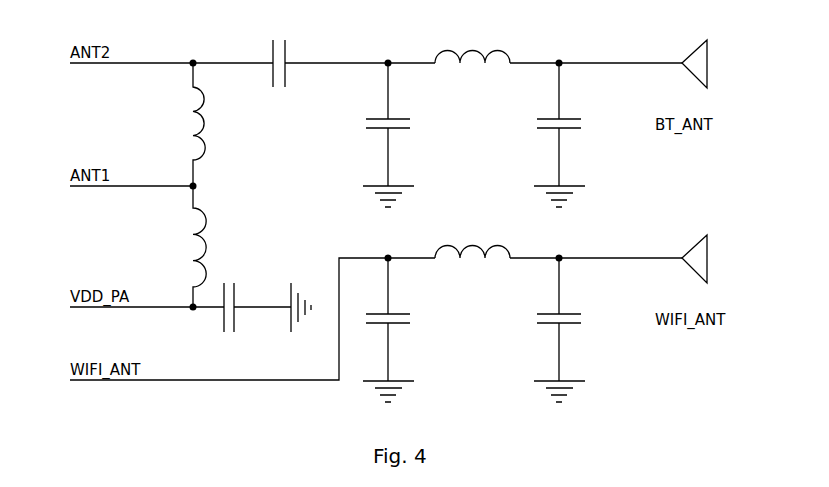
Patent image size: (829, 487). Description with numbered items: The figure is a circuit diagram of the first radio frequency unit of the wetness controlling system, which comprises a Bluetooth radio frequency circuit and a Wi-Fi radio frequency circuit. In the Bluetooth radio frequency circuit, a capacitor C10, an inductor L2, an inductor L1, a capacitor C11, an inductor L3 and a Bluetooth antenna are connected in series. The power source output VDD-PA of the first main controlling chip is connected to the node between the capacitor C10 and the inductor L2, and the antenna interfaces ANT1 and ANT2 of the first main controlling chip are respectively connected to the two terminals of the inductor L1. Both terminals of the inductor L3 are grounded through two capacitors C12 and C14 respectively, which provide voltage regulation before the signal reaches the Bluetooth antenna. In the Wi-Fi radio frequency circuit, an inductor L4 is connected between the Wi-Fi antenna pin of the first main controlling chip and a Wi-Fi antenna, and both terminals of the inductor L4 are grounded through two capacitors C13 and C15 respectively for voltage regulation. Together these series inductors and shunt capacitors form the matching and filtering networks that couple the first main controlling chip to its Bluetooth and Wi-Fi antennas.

The capacitor C10 is at (233, 298).
The capacitor C11 is at (278, 54).
The capacitor C12 is at (405, 98).
The capacitor C13 is at (405, 293).
The capacitor C14 is at (576, 98).
The capacitor C15 is at (576, 293).
The inductor L1 is at (208, 124).
The inductor L2 is at (208, 246).
The inductor L3 is at (472, 49).
The inductor L4 is at (472, 244).